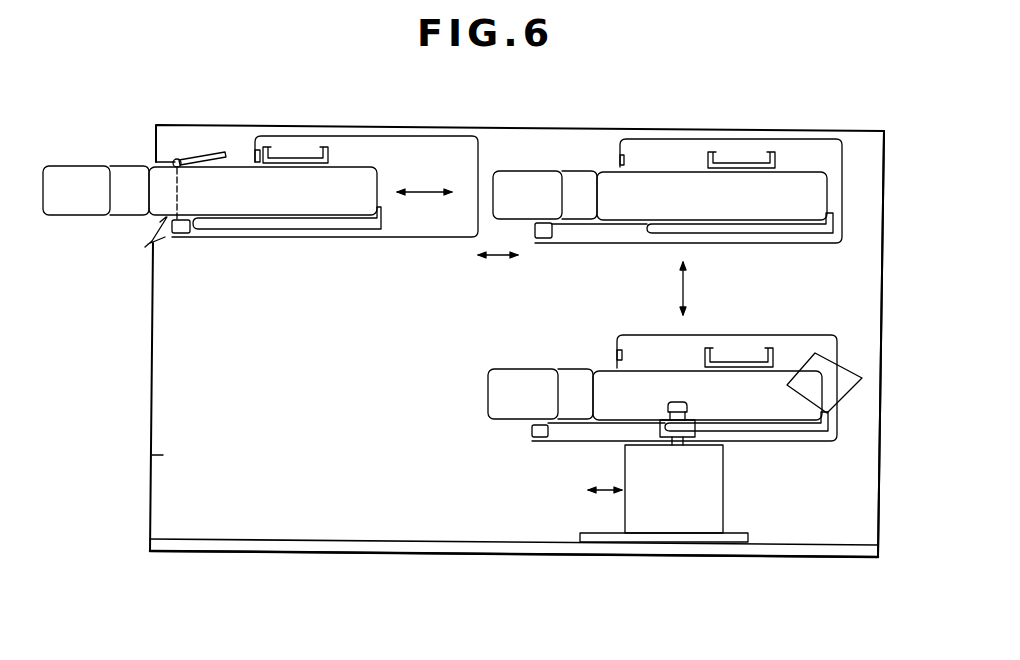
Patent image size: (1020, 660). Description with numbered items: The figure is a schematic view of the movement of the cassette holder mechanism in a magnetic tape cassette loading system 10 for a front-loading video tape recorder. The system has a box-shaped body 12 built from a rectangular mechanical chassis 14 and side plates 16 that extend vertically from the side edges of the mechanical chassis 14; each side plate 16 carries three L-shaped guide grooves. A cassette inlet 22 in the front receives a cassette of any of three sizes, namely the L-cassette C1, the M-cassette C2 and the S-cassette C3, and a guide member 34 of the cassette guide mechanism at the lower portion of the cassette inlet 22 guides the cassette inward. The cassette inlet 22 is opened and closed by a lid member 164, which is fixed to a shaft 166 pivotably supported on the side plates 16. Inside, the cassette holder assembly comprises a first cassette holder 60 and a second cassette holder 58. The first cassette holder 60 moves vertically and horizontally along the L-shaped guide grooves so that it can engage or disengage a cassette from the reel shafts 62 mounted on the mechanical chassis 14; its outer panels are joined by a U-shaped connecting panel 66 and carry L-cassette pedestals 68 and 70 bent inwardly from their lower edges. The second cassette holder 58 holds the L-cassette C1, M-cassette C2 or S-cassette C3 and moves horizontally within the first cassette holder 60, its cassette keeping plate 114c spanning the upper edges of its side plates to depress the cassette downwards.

The magnetic tape cassette loading system 10 is at (523, 570).
The body 12 is at (437, 562).
The mechanical chassis 14 is at (150, 548).
The side plates 16 is at (150, 456).
The cassette inlet 22 is at (150, 162).
The guide member 34 is at (148, 232).
The second cassette holder 58 is at (297, 229).
The first cassette holder 60 is at (417, 136).
The reel shafts 62 is at (696, 428).
The connecting panel 66 is at (255, 152).
The L-cassette pedestal 68 is at (180, 233).
The L-cassette pedestal 70 is at (382, 351).
The cassette keeping plate 114c is at (306, 147).
The lid member 164 is at (210, 151).
The shaft 166 is at (176, 158).
The L-cassette C1 is at (76, 176).
The M-cassette C2 is at (126, 210).
The S-cassette C3 is at (348, 215).